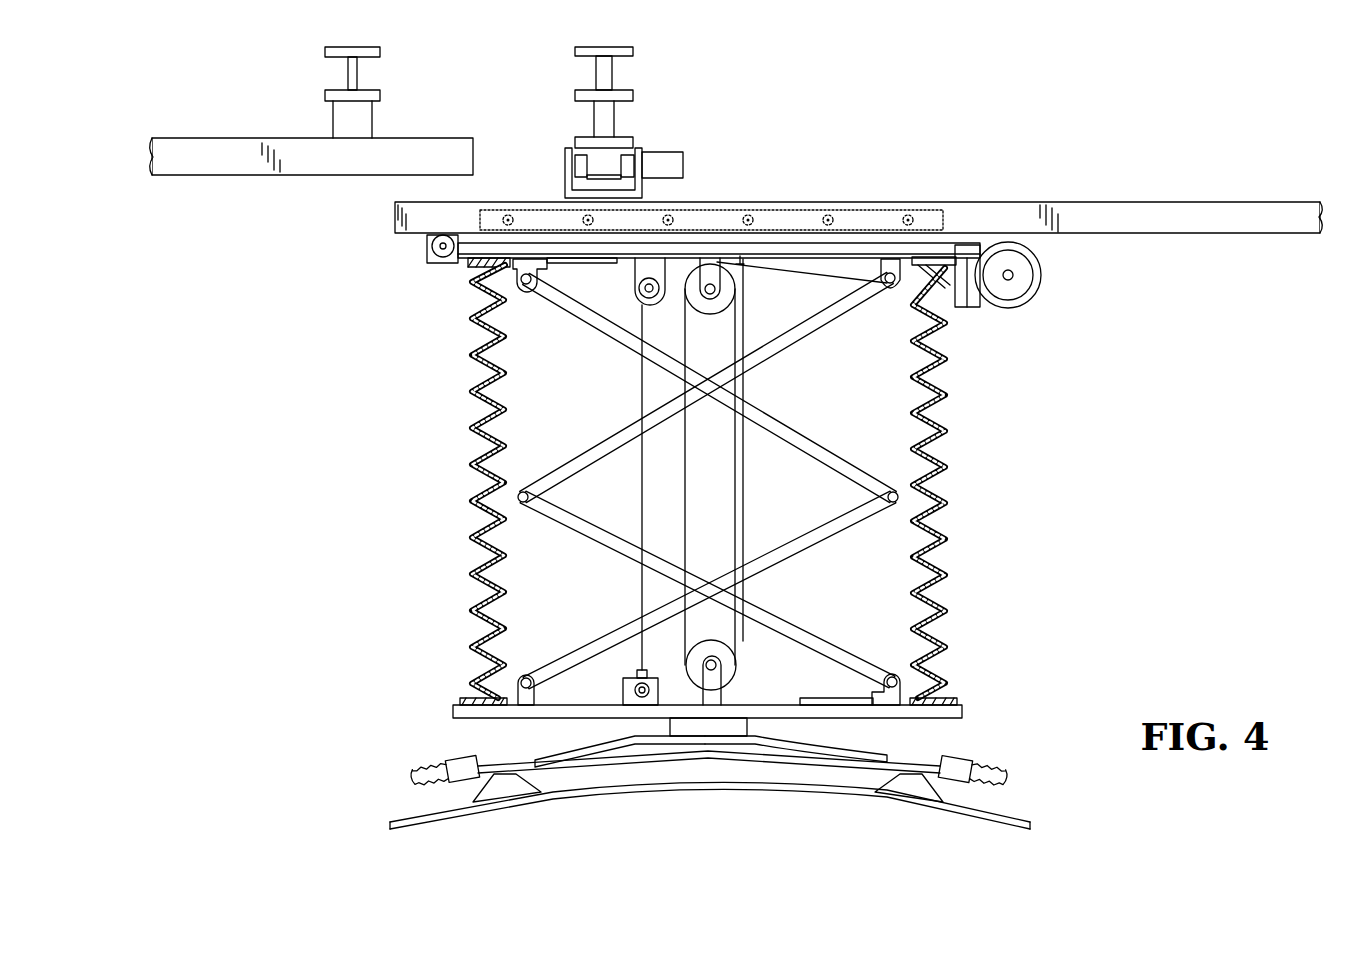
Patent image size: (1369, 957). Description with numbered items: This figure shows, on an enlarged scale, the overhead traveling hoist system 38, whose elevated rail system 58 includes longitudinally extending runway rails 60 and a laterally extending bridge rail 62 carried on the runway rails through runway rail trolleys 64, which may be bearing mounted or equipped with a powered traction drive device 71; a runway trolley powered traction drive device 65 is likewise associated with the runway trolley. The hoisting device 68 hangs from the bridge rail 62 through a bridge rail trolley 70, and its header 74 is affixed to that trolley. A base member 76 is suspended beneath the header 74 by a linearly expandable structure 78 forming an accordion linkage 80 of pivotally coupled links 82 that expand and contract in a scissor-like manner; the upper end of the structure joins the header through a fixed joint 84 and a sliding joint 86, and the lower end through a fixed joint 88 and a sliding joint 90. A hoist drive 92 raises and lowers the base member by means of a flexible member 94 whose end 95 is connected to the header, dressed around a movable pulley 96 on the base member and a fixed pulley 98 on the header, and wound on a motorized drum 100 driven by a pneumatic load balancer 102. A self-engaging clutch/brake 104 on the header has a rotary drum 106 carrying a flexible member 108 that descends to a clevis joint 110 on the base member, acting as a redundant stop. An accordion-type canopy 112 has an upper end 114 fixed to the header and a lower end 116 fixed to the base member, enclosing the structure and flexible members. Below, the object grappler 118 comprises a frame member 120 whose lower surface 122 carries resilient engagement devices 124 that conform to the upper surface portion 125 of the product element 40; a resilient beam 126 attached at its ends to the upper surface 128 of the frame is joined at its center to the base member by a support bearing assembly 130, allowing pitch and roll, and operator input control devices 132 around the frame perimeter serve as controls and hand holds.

The overhead traveling hoist system 38 is at (792, 113).
The product element 40 is at (400, 828).
The elevated rail system 58 is at (498, 112).
The runway rail 60 is at (630, 140).
The bridge rail 62 is at (1214, 212).
The runway rail trolley 64 is at (567, 176).
The runway trolley powered traction drive device 65 is at (663, 155).
The hoisting device 68 is at (397, 545).
The bridge rail trolley 70 is at (870, 232).
The powered traction drive device 71 is at (427, 253).
The header 74 is at (800, 250).
The base member 76 is at (480, 714).
The linearly expandable structure 78 is at (848, 455).
The accordion linkage 80 is at (580, 528).
The pivotally coupled link 82 is at (585, 316).
The fixed joint 84 is at (955, 300).
The sliding joint 86 is at (472, 290).
The fixed joint 88 is at (528, 674).
The sliding joint 90 is at (930, 690).
The hoist drive 92 is at (1052, 268).
The flexible member 94 is at (748, 480).
The end of flexible member 95 is at (741, 258).
The movable pulley 96 is at (740, 668).
The fixed pulley 98 is at (728, 287).
The motorized drum 100 is at (1014, 283).
The pneumatic load balancer 102 is at (1031, 284).
The self-engaging clutch/brake 104 is at (637, 272).
The rotary drum 106 is at (655, 282).
The flexible member 108 is at (641, 470).
The clevis joint 110 is at (656, 684).
The accordion-type canopy 112 is at (948, 490).
The upper end of canopy 114 is at (930, 260).
The lower end of canopy 116 is at (940, 715).
The object grappler 118 is at (1026, 800).
The frame member 120 is at (790, 782).
The lower surface 122 is at (455, 776).
The product element engagement device 124 is at (510, 798).
The upper surface portion 125 is at (1030, 828).
The resilient beam 126 is at (620, 760).
The upper surface 128 is at (890, 762).
The support bearing assembly 130 is at (708, 733).
The operator input control device 132 is at (458, 768).